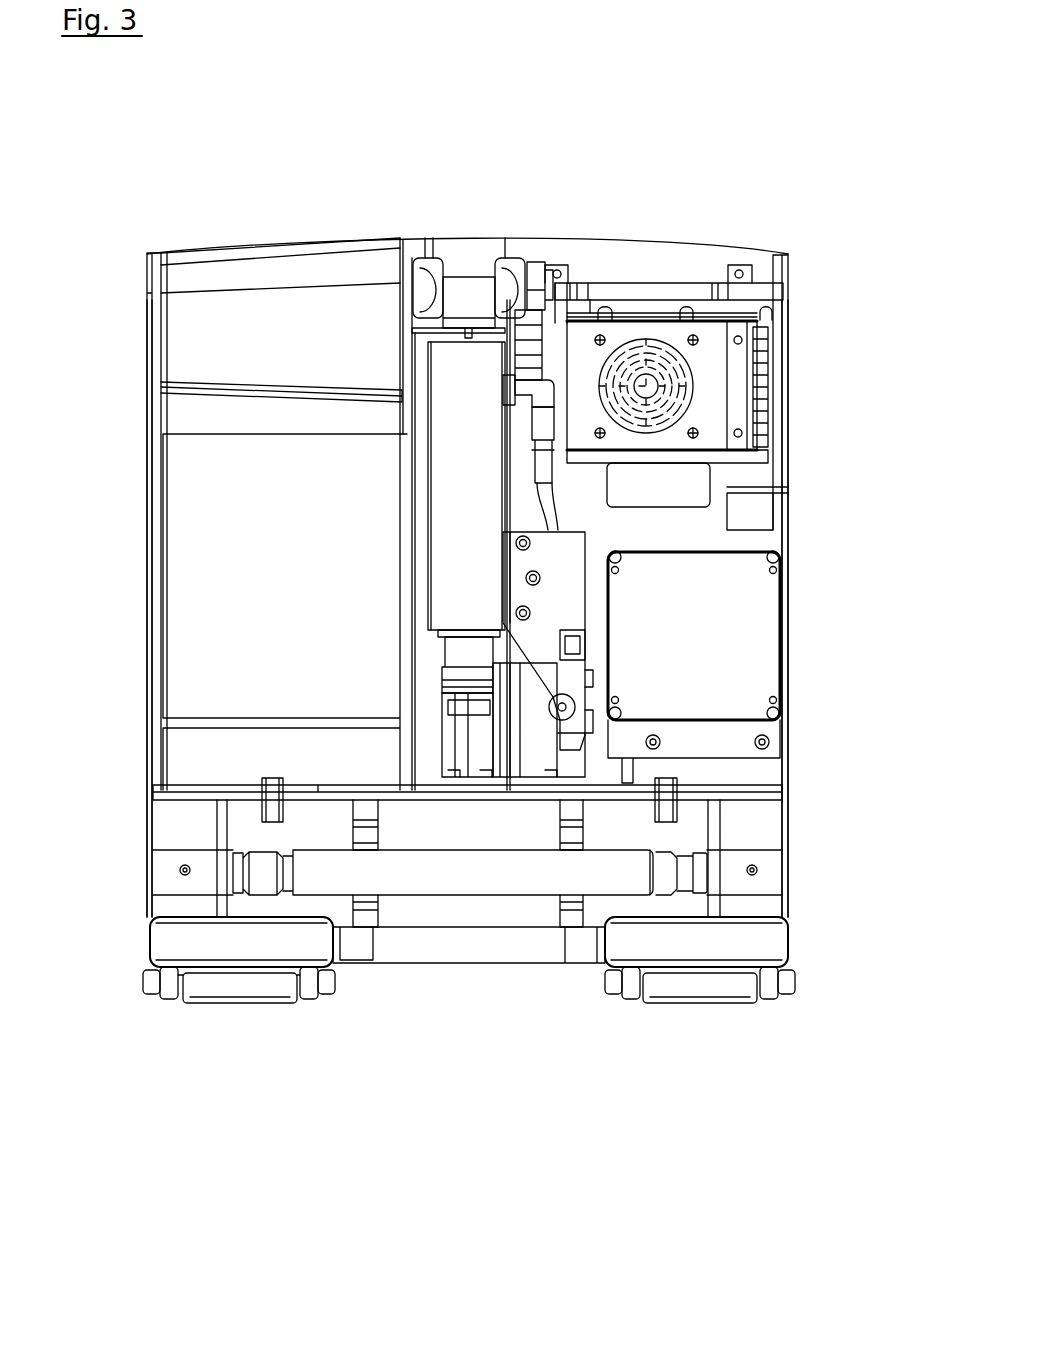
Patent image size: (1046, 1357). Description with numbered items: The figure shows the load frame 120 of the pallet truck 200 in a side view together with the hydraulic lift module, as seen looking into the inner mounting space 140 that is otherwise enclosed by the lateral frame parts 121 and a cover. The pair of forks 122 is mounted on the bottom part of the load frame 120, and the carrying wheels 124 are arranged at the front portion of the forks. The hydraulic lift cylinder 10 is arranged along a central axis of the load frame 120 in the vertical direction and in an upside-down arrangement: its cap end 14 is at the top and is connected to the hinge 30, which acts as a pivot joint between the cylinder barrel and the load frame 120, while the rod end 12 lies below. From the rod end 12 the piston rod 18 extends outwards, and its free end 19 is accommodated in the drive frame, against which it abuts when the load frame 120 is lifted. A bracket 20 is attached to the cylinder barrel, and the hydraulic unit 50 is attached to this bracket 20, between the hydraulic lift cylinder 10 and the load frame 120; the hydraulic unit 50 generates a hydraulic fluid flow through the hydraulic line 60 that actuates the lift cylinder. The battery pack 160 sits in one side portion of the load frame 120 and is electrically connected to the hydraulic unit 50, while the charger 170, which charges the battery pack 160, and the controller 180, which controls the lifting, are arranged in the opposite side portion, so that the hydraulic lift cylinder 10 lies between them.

The hydraulic lift cylinder 10 is at (478, 502).
The rod end 12 is at (475, 627).
The cap end 14 is at (462, 323).
The piston rod 18 is at (472, 657).
The free end 19 is at (467, 710).
The bracket 20 is at (570, 587).
The hinge 30 is at (510, 273).
The hydraulic unit 50 is at (538, 730).
The hydraulic line 60 is at (548, 495).
The load frame 120 is at (608, 253).
The lateral frame parts 121 is at (147, 437).
The pair of forks 122 is at (273, 947).
The carrying wheels 124 is at (227, 1003).
The inner mounting space 140 is at (326, 176).
The battery pack 160 is at (273, 275).
The charger 170 is at (710, 357).
The controller 180 is at (738, 677).
The pallet truck 200 is at (760, 160).